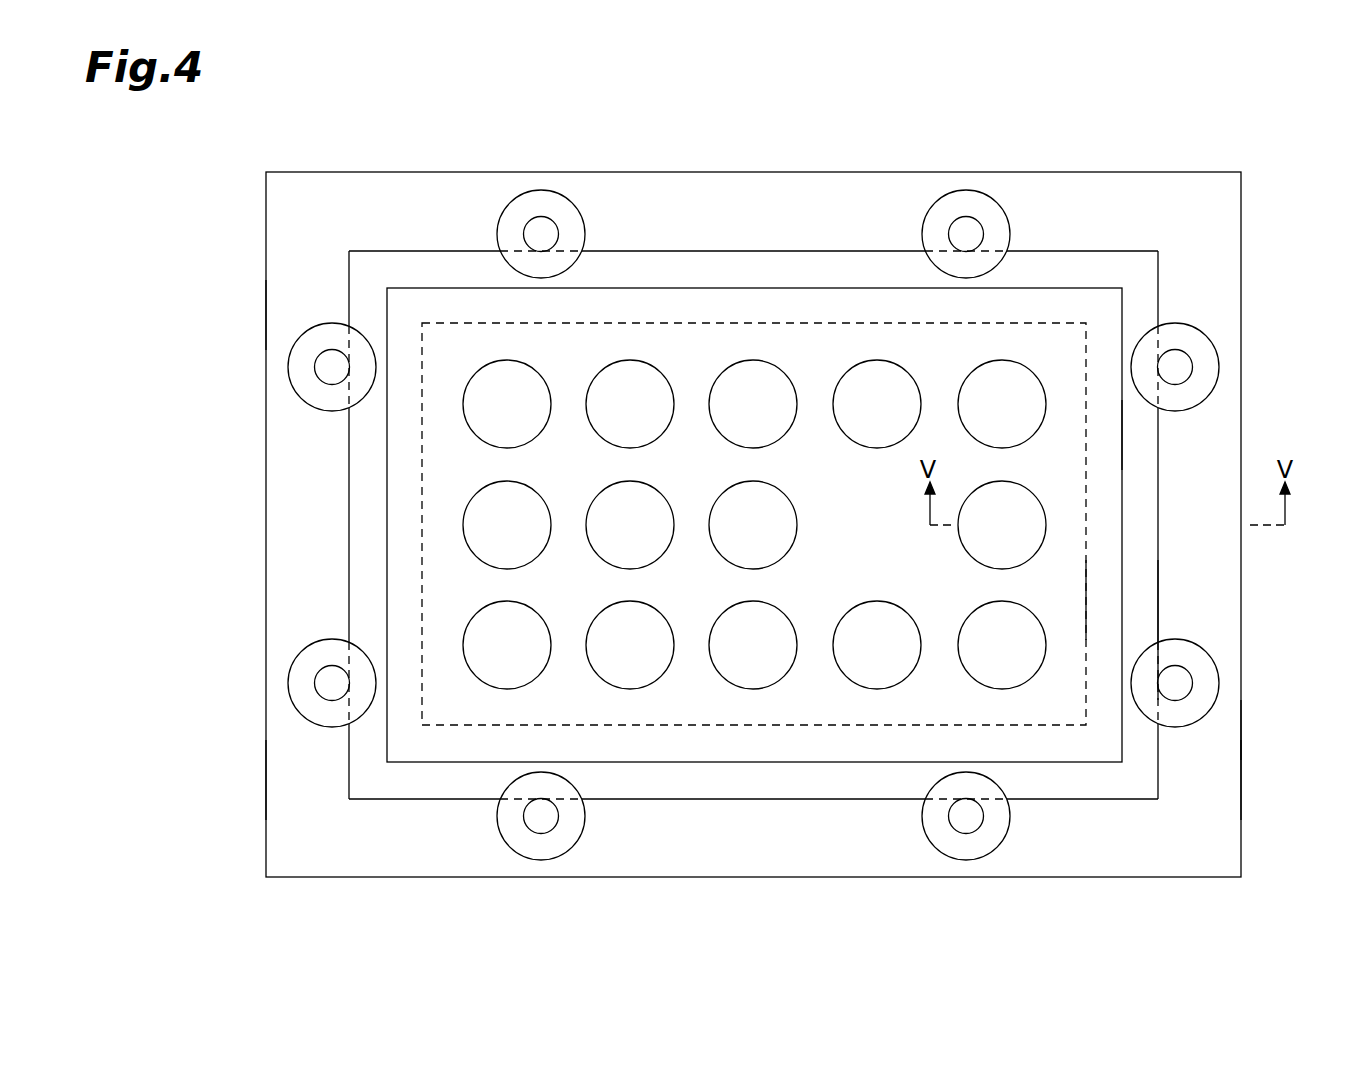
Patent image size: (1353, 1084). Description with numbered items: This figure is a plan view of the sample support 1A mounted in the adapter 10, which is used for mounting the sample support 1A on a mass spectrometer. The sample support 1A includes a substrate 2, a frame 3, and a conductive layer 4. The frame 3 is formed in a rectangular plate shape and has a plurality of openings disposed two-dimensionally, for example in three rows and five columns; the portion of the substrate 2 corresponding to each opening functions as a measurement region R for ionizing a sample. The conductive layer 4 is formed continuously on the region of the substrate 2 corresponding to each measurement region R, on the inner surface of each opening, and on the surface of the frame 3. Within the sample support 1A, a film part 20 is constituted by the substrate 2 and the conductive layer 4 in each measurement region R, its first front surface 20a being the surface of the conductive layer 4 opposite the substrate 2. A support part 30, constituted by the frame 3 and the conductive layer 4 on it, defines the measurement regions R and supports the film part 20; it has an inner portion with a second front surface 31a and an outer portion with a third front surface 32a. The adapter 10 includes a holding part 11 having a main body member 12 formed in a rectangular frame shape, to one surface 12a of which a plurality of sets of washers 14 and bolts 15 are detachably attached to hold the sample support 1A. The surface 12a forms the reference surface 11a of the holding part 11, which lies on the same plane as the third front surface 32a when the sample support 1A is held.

The adapter 10 is at (452, 880).
The holding part 11 is at (265, 778).
The reference surface 11a is at (280, 316).
The main body member 12 is at (1243, 777).
The surface 12a is at (1228, 737).
The sample support 1A is at (1080, 249).
The substrate 2 is at (420, 465).
The frame 3 is at (349, 553).
The conductive layer 4 is at (757, 673).
The washer 14 is at (510, 204).
The bolt 15 is at (540, 217).
The film part 20 is at (637, 666).
The first front surface 20a is at (878, 380).
The support part 30 is at (1161, 621).
The second front surface 31a is at (1065, 592).
The third front surface 32a is at (1143, 433).
The measurement region R is at (742, 496).